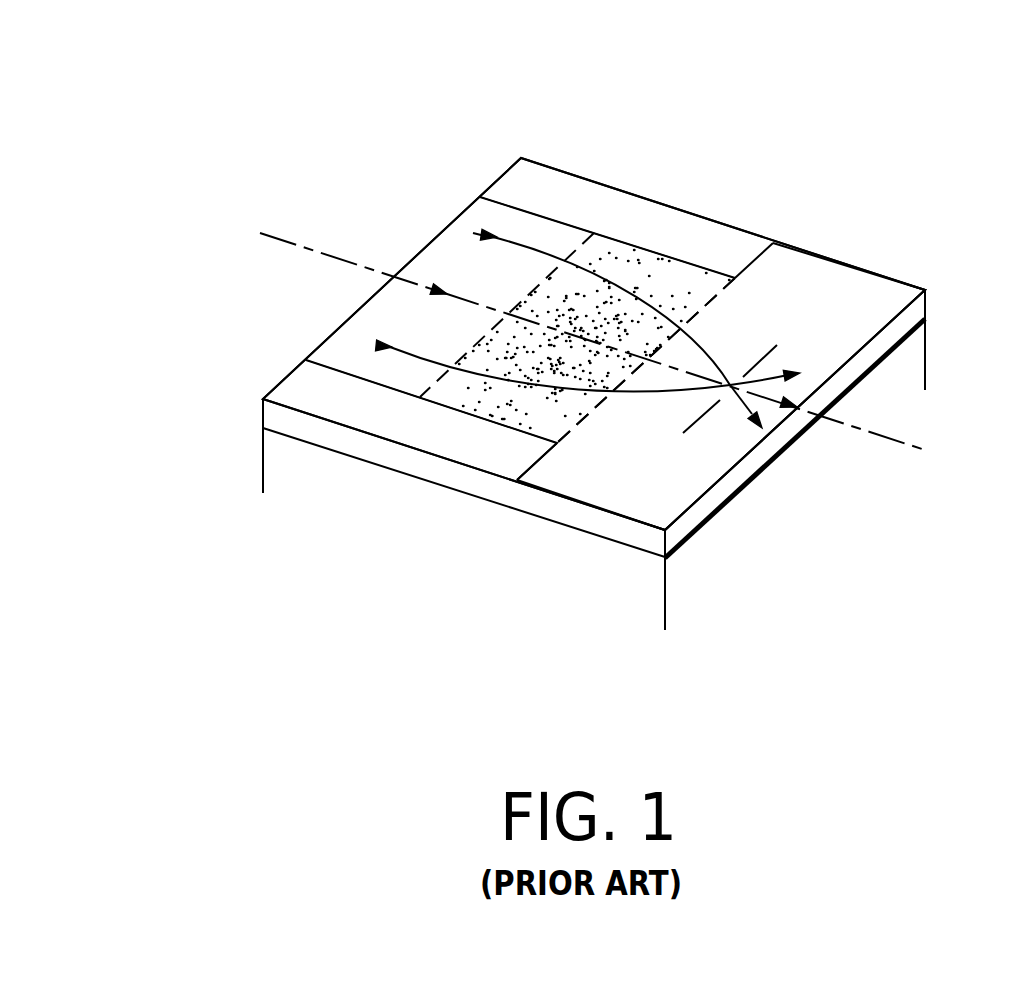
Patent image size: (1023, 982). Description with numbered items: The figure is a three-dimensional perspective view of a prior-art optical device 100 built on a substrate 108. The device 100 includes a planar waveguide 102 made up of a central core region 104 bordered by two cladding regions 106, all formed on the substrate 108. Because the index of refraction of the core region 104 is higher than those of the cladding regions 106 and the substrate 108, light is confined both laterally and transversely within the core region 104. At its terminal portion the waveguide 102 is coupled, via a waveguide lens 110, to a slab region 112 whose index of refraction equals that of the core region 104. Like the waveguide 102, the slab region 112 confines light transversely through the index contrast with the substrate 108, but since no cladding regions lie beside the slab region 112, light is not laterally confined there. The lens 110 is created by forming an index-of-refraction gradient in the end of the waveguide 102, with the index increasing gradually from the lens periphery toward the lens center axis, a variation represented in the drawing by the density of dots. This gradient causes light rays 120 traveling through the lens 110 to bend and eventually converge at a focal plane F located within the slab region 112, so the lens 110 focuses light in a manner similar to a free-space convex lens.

The optical device 100 is at (72, 631).
The planar waveguide 102 is at (612, 123).
The core region 104 is at (420, 250).
The cladding regions 106 is at (522, 157).
The substrate 108 is at (295, 455).
The waveguide lens 110 is at (675, 278).
The slab region 112 is at (828, 257).
The light rays 120 is at (513, 240).
The focal plane F is at (730, 389).